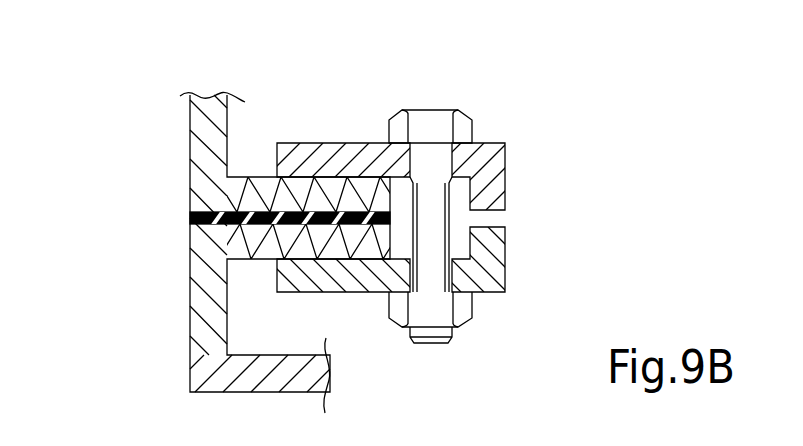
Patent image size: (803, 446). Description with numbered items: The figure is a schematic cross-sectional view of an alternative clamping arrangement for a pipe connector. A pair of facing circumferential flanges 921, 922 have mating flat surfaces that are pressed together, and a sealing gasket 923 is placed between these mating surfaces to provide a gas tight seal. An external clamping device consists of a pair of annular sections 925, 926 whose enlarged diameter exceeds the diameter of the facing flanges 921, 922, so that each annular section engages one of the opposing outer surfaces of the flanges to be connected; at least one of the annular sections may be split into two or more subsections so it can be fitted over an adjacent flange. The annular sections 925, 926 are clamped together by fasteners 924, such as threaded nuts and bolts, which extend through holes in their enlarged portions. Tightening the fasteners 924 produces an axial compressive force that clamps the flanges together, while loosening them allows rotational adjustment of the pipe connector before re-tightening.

The circumferential flange 921 is at (207, 181).
The circumferential flange 922 is at (207, 292).
The sealing gasket 923 is at (190, 218).
The fastener 924 is at (453, 98).
The annular section 925 is at (505, 173).
The annular section 926 is at (505, 258).